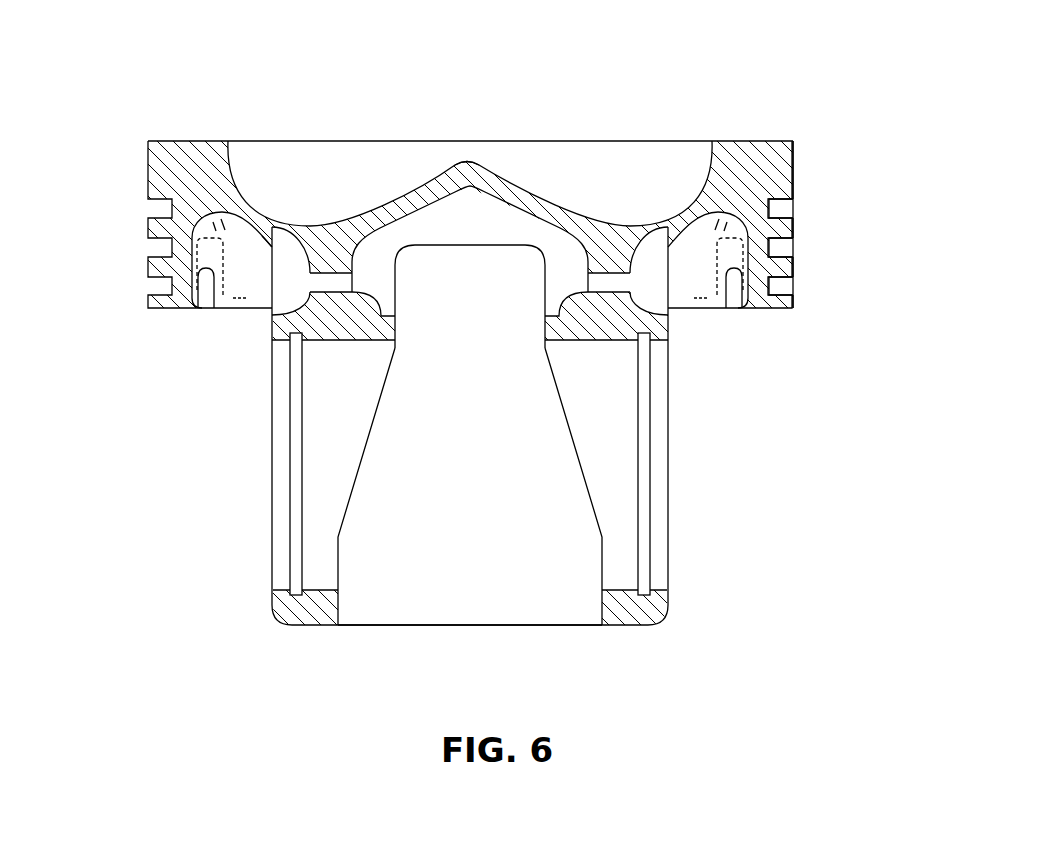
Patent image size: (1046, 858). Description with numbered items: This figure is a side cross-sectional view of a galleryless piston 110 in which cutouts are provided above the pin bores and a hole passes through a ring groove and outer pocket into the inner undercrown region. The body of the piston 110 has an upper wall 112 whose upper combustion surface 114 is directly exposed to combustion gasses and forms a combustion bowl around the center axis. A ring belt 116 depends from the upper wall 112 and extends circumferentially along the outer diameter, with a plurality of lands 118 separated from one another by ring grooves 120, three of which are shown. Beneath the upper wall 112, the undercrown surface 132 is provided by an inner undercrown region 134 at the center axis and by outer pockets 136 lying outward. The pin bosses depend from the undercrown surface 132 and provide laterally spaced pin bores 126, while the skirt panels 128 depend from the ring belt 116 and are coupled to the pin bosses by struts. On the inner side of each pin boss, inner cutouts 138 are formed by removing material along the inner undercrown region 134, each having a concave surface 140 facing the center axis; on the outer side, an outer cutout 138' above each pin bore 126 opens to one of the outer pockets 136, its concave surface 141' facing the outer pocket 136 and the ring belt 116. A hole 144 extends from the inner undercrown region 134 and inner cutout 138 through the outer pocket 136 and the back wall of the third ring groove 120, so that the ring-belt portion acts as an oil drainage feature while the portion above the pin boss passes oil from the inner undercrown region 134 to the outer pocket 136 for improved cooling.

The piston 110 is at (114, 103).
The upper wall 112 is at (150, 140).
The upper combustion surface 114 is at (235, 181).
The undercrown surface 132 is at (425, 200).
The ring belt 116 is at (805, 178).
The lands 118 is at (794, 158).
The ring grooves 120 is at (769, 203).
The outer pockets 136 is at (232, 284).
The inner cutouts 138 is at (470, 239).
The outer cutout 138' is at (456, 300).
The concave surface 141' is at (465, 244).
The inner undercrown region 134 is at (496, 286).
The hole 144 is at (330, 284).
The concave surface 140 is at (377, 298).
The pin bores 126 is at (308, 461).
The skirt panels 128 is at (497, 598).